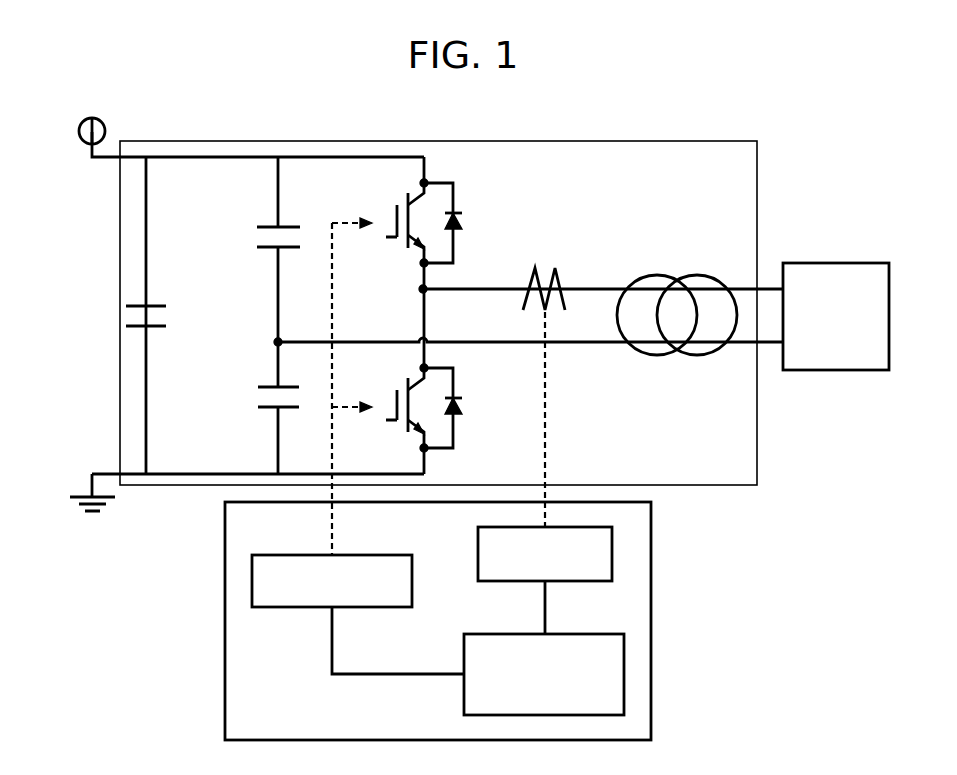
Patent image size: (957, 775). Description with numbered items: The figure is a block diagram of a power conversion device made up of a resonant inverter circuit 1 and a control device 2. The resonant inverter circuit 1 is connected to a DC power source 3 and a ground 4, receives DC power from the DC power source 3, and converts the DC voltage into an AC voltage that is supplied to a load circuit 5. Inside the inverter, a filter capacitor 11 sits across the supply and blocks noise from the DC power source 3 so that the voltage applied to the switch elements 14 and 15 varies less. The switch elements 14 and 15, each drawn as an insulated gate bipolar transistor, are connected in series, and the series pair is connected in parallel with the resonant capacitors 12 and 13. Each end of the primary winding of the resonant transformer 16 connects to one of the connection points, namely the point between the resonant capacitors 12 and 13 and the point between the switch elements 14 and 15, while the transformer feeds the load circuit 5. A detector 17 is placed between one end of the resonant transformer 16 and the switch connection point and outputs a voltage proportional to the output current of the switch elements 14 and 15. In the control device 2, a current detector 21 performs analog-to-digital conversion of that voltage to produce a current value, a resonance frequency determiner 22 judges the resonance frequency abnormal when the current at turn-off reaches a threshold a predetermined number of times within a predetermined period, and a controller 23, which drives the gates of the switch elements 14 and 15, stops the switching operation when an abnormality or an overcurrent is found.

The resonant inverter circuit 1 is at (623, 140).
The control device 2 is at (651, 607).
The DC power source 3 is at (105, 130).
The ground 4 is at (92, 492).
The load circuit 5 is at (803, 263).
The filter capacitor 11 is at (130, 306).
The resonant capacitor 12 is at (272, 227).
The resonant capacitor 13 is at (265, 387).
The switch element 14 is at (397, 215).
The switch element 15 is at (390, 412).
The resonant transformer 16 is at (660, 276).
The detector 17 is at (536, 268).
The current detector 21 is at (485, 581).
The resonance frequency determiner 22 is at (464, 706).
The controller 23 is at (385, 553).